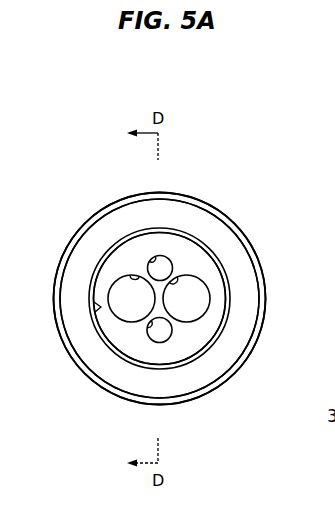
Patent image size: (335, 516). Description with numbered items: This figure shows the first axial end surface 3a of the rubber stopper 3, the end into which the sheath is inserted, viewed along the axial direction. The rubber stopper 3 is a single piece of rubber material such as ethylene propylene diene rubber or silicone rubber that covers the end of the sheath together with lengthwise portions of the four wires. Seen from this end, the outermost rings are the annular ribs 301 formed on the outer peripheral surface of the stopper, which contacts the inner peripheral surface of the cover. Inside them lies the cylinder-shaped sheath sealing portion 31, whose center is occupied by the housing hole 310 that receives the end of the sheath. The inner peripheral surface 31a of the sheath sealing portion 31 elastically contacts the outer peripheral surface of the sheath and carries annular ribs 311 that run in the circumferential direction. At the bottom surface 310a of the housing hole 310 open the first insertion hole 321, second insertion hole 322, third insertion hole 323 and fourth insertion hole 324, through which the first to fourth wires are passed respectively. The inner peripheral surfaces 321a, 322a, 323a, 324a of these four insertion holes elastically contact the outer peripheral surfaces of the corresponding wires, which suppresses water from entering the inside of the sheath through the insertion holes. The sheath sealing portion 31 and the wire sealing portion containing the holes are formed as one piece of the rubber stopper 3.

The rubber stopper 3 is at (88, 207).
The first axial end surface 3a is at (193, 380).
The sheath sealing portion 31 is at (238, 320).
The inner peripheral surface 31a is at (101, 308).
The rib 301 is at (175, 400).
The housing hole 310 is at (142, 233).
The bottom surface 310a is at (190, 333).
The rib 311 is at (226, 306).
The first insertion hole 321 is at (131, 298).
The inner peripheral surface 321a is at (133, 278).
The second insertion hole 322 is at (184, 298).
The inner peripheral surface 322a is at (172, 280).
The third insertion hole 323 is at (153, 259).
The inner peripheral surface 323a is at (160, 268).
The fourth insertion hole 324 is at (159, 331).
The inner peripheral surface 324a is at (149, 326).